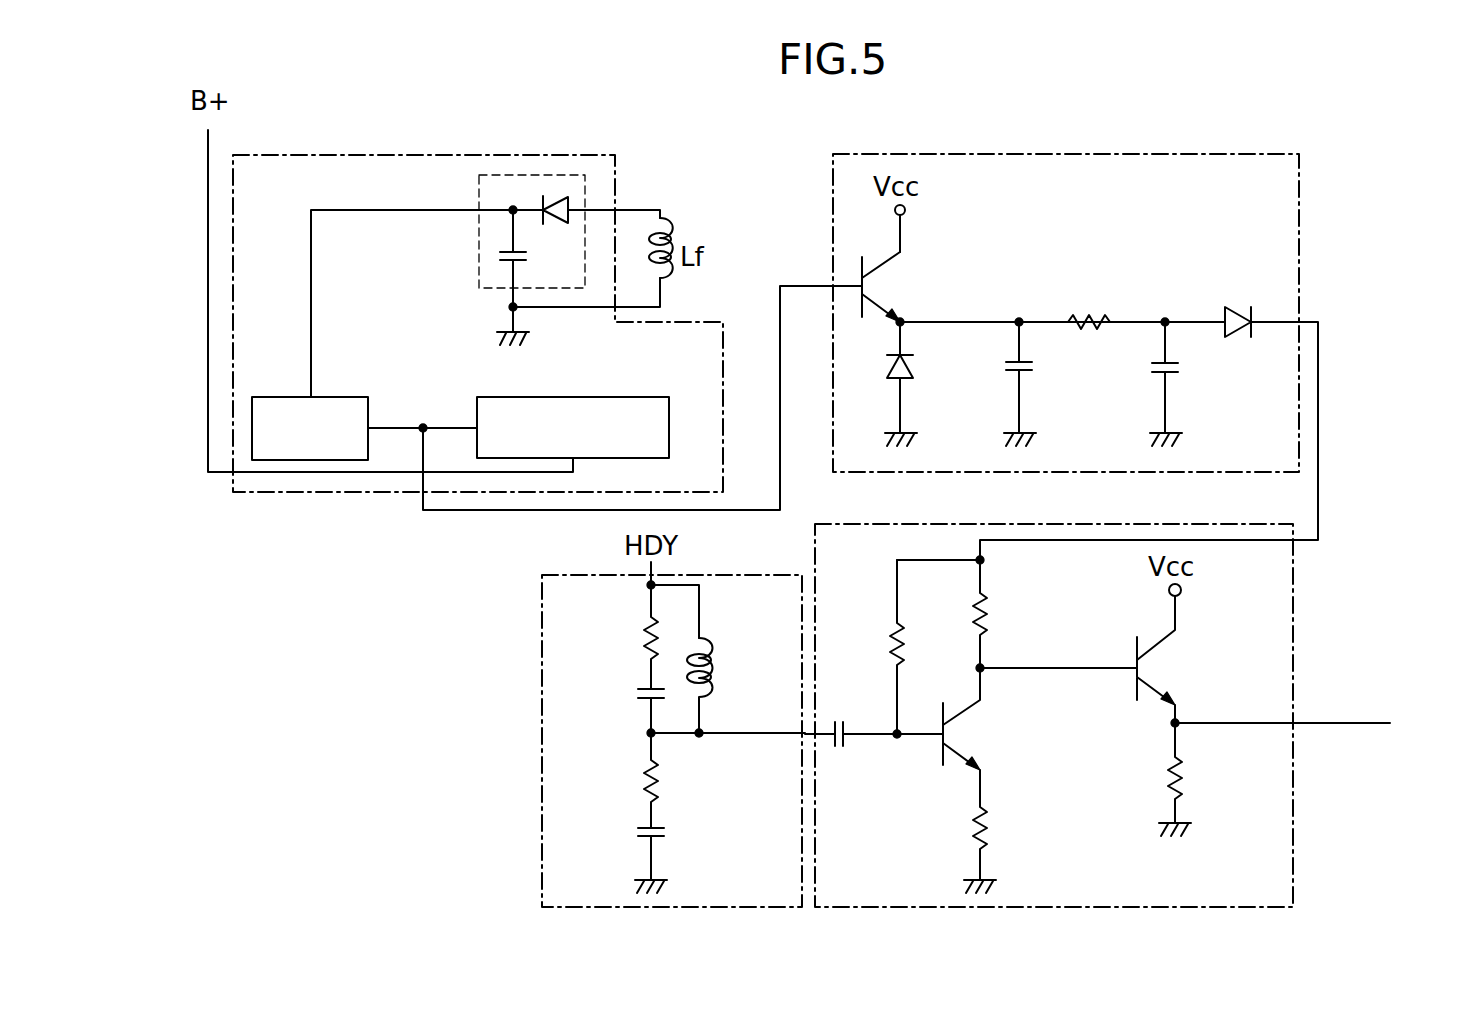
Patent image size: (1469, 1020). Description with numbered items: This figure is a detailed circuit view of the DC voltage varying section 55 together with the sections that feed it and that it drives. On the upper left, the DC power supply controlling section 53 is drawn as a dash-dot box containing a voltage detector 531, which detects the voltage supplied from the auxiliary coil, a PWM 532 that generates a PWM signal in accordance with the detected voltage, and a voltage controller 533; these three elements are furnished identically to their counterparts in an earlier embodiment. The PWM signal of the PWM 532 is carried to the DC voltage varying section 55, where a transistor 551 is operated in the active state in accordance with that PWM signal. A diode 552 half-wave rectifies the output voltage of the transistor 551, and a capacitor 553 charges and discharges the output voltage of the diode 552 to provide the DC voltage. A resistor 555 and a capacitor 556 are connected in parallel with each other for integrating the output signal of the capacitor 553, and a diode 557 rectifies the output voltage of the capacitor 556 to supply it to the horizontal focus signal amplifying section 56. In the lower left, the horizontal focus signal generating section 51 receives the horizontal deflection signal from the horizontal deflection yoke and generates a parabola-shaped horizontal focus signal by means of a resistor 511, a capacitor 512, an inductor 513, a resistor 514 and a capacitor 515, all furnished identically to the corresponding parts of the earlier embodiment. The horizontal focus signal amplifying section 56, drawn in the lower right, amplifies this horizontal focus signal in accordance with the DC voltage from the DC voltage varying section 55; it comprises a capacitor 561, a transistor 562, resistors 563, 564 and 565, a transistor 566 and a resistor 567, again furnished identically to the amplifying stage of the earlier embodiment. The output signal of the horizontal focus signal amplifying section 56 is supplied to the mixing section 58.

The horizontal focus signal generating section 51 is at (541, 801).
The DC power supply controlling section 53 is at (432, 153).
The DC voltage varying section 55 is at (1232, 153).
The horizontal focus signal amplifying section 56 is at (1294, 622).
The mixing section 58 is at (1413, 726).
The resistor 511 is at (645, 640).
The capacitor 512 is at (642, 694).
The inductor 513 is at (710, 655).
The resistor 514 is at (662, 786).
The capacitor 515 is at (665, 834).
The voltage detector 531 is at (479, 263).
The PWM 532 is at (356, 396).
The voltage controller 533 is at (572, 396).
The transistor 551 is at (888, 283).
The diode 552 is at (910, 371).
The capacitor 553 is at (1030, 366).
The resistor 555 is at (1088, 315).
The capacitor 556 is at (1176, 368).
The diode 557 is at (1237, 310).
The capacitor 561 is at (842, 748).
The transistor 562 is at (966, 738).
The resistor 563 is at (892, 642).
The resistor 564 is at (986, 616).
The resistor 565 is at (988, 820).
The transistor 566 is at (1160, 670).
The resistor 567 is at (1183, 775).